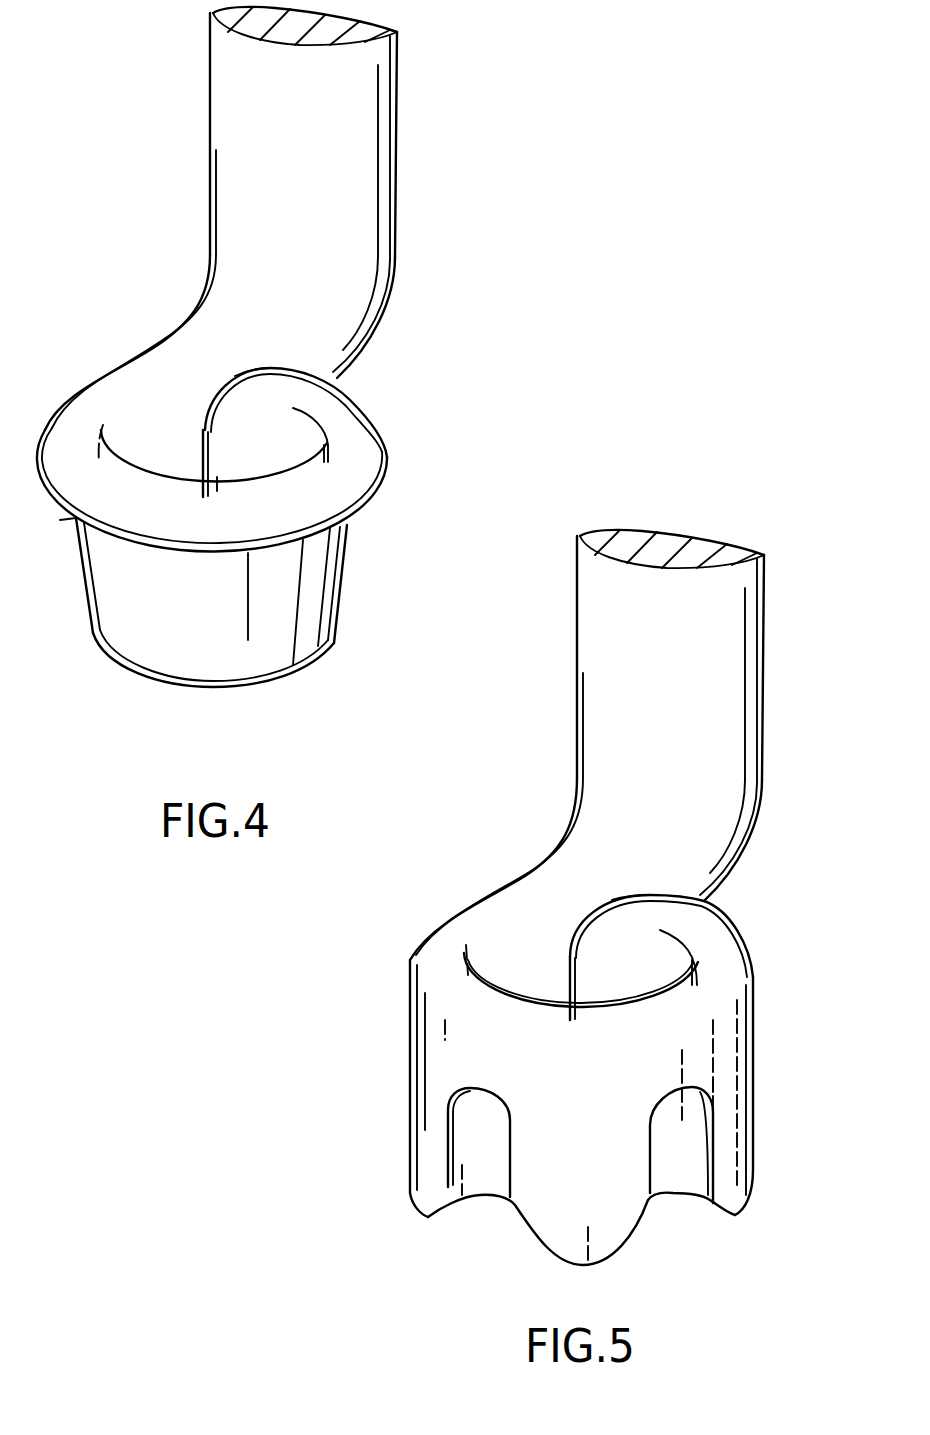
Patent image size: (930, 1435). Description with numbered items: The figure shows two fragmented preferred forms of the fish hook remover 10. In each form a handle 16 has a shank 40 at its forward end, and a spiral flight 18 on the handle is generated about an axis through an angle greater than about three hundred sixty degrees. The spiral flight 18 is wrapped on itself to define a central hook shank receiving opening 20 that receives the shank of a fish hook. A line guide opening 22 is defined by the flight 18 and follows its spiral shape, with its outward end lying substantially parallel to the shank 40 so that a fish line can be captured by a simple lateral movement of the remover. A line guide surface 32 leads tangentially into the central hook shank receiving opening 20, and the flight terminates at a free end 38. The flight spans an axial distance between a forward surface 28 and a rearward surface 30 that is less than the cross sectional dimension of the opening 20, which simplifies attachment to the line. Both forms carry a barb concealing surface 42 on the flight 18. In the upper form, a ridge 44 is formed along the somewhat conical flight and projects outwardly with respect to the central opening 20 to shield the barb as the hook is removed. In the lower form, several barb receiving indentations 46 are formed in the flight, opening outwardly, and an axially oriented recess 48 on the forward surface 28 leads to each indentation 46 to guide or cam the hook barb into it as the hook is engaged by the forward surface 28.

In FIG. 4, the hook remover 10 is at (444, 283).
In FIG. 5, the hook remover 10 is at (811, 805).
In FIG. 4, the handle 16 is at (399, 93).
In FIG. 5, the handle 16 is at (766, 618).
In FIG. 4, the spiral flight 18 is at (345, 586).
In FIG. 5, the spiral flight 18 is at (415, 1062).
In FIG. 4, the central hook shank receiving opening 20 is at (257, 453).
In FIG. 5, the central hook shank receiving opening 20 is at (625, 975).
In FIG. 4, the line guide opening 22 is at (247, 372).
In FIG. 5, the line guide opening 22 is at (617, 898).
In FIG. 4, the forward surface 28 is at (150, 680).
In FIG. 5, the forward surface 28 is at (735, 1217).
In FIG. 4, the rearward surface 30 is at (355, 444).
In FIG. 5, the rearward surface 30 is at (723, 968).
In FIG. 4, the line guide surface 32 is at (309, 371).
In FIG. 5, the line guide surface 32 is at (678, 895).
In FIG. 4, the free end 38 is at (198, 475).
In FIG. 5, the free end 38 is at (567, 997).
In FIG. 4, the shank 40 is at (262, 203).
In FIG. 5, the shank 40 is at (627, 728).
In FIG. 4, the barb concealing surface 42 is at (59, 518).
In FIG. 5, the barb concealing surface 42 is at (474, 1217).
In FIG. 4, the ridge 44 is at (340, 487).
In FIG. 5, the barb receiving indentation 46 is at (670, 1140).
In FIG. 5, the axially oriented recess 48 is at (498, 1208).